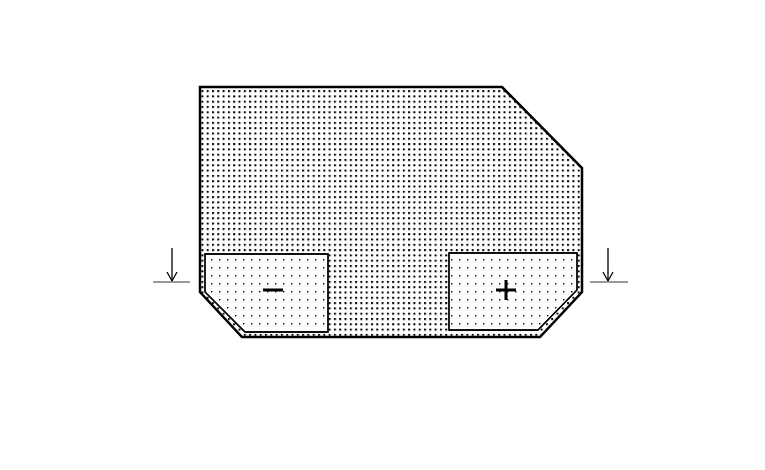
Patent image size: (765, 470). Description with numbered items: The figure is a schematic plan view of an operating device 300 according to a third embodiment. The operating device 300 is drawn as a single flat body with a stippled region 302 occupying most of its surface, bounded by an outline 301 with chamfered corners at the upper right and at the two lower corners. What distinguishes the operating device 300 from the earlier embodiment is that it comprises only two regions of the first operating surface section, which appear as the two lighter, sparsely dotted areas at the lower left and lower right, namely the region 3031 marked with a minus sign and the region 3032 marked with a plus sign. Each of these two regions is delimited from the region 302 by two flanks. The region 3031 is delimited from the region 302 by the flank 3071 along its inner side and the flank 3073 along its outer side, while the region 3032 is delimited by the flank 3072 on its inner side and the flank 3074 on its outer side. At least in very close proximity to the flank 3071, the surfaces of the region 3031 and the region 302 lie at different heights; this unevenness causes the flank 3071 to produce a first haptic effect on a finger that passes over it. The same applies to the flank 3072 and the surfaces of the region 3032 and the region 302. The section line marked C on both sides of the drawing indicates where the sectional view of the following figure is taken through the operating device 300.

The operating device 300 is at (100, 59).
The substrate / cell body 301 is at (198, 110).
The region 302 is at (520, 152).
The region 3031 is at (260, 310).
The region 3032 is at (533, 295).
The flank 3071 is at (333, 313).
The flank 3072 is at (455, 312).
The flank 3073 is at (227, 260).
The flank 3074 is at (553, 262).